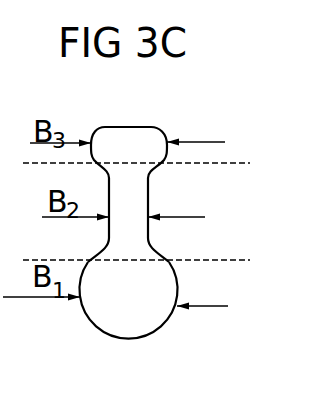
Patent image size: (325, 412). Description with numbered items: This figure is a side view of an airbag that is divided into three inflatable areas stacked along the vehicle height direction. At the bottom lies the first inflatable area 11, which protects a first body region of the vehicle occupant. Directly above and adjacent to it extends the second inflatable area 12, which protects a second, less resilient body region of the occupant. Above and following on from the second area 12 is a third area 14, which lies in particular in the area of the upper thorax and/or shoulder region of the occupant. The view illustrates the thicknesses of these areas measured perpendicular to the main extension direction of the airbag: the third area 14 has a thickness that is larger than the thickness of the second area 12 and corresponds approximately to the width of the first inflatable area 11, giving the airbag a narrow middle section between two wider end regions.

The third area 14 is at (147, 142).
The second inflatable area 12 is at (138, 200).
The first inflatable area 11 is at (163, 292).